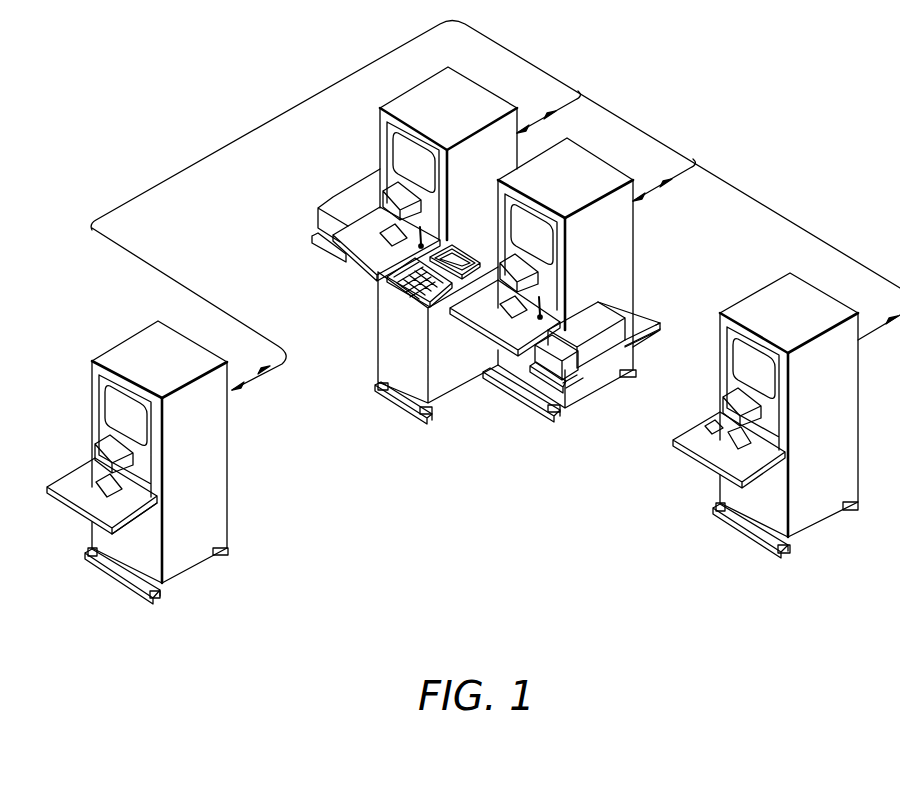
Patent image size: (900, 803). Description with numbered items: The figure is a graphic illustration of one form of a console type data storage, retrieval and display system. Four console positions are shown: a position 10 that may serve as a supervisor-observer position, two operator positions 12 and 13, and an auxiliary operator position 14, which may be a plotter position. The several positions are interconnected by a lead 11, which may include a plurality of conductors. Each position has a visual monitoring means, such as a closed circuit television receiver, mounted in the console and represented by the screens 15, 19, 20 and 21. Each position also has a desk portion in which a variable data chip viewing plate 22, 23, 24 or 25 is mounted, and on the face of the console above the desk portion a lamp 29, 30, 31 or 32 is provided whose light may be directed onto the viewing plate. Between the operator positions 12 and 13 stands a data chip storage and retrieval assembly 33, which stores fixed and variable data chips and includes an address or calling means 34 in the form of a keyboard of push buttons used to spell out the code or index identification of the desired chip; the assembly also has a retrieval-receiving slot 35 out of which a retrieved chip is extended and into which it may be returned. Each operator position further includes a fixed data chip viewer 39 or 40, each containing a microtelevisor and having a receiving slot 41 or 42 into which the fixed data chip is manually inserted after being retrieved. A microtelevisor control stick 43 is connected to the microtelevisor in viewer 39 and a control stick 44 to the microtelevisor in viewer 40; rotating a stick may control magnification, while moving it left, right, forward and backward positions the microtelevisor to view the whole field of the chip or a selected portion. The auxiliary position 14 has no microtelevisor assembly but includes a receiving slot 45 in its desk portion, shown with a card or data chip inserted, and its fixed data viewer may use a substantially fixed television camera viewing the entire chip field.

The position 10 is at (137, 462).
The lead 11 is at (92, 229).
The operator position 12 is at (452, 153).
The operator position 13 is at (561, 280).
The auxiliary operator position 14 is at (760, 415).
The screen 15 is at (126, 416).
The screen 19 is at (414, 163).
The screen 20 is at (532, 235).
The screen 21 is at (754, 369).
The variable data chip viewing plate 22 is at (103, 486).
The variable data chip viewing plate 23 is at (386, 239).
The variable data chip viewing plate 24 is at (511, 313).
The variable data chip viewing plate 25 is at (731, 441).
The lamp 29 is at (95, 446).
The lamp 30 is at (379, 221).
The lamp 31 is at (495, 291).
The lamp 32 is at (720, 399).
The data chip storage and retrieval assembly 33 is at (377, 350).
The address or calling means 34 is at (404, 296).
The retrieval-receiving slot 35 is at (458, 253).
The fixed data chip viewer 39 is at (349, 183).
The fixed data chip viewer 40 is at (647, 341).
The receiving slot 41 is at (325, 203).
The receiving slot 42 is at (582, 356).
The microtelevisor control stick 43 is at (428, 229).
The microtelevisor control stick 44 is at (547, 305).
The receiving slot 45 is at (705, 423).